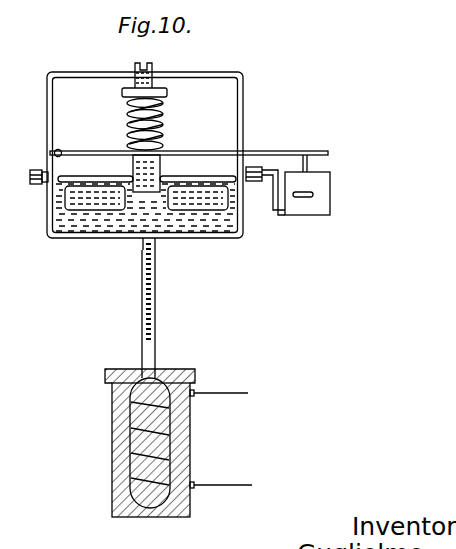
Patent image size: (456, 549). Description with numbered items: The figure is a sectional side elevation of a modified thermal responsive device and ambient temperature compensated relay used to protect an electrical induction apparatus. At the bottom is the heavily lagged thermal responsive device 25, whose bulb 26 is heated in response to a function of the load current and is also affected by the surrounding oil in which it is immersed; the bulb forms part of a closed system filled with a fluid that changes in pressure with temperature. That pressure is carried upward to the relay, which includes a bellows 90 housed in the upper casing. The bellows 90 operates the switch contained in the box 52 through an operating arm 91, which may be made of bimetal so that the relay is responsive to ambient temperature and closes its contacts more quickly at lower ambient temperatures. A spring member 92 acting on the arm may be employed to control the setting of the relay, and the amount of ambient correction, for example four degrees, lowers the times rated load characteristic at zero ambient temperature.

The thermal responsive device 25 is at (217, 443).
The bulb 26 is at (169, 373).
The switch box 52 is at (331, 190).
The bellows 90 is at (246, 219).
The operating arm 91 is at (283, 151).
The spring member 92 is at (164, 106).